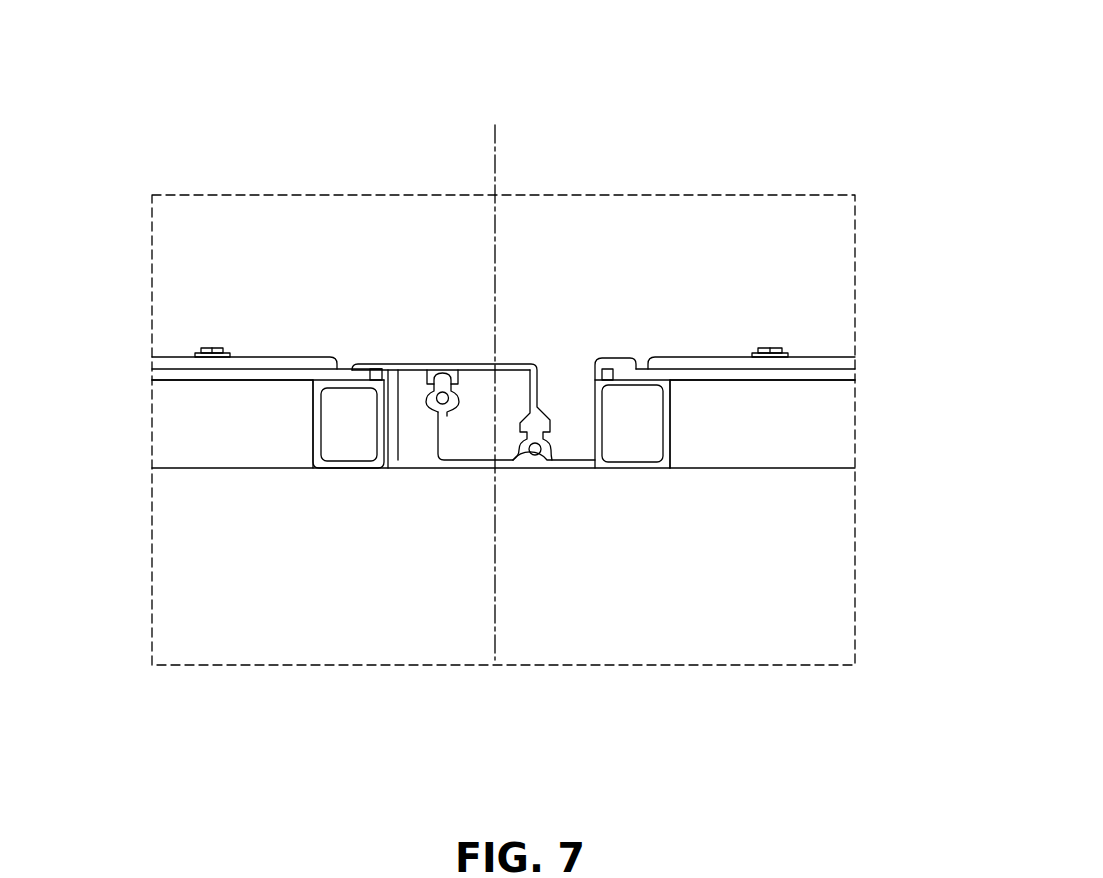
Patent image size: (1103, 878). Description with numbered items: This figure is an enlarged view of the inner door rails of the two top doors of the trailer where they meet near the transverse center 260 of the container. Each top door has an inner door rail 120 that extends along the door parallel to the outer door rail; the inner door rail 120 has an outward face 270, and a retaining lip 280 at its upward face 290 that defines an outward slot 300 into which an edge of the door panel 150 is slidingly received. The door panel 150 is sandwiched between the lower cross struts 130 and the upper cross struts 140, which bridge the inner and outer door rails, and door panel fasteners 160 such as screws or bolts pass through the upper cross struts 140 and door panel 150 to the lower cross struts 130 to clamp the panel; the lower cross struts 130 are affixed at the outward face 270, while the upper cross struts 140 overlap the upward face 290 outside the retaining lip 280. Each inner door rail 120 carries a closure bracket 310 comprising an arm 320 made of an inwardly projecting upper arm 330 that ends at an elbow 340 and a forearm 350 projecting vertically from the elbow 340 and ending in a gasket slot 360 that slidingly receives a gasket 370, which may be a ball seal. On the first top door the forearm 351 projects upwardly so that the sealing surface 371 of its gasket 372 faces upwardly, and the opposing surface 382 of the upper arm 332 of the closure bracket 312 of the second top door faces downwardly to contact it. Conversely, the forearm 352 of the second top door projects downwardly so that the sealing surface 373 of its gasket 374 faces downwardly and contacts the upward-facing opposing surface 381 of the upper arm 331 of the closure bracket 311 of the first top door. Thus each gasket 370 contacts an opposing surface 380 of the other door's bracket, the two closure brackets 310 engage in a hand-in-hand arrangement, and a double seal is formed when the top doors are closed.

The inner door rail 120 is at (322, 468).
The lower cross struts 130 is at (192, 437).
The upper cross struts 140 is at (183, 368).
The door panel 150 is at (202, 373).
The door panel fasteners 160 is at (212, 348).
The transverse center 260 is at (497, 150).
The outward face 270 is at (312, 428).
The retaining lip 280 is at (372, 363).
The upward face 290 is at (352, 385).
The outward slot 300 is at (344, 366).
The closure bracket 310 is at (553, 448).
The closure bracket of the first top door 311 is at (580, 470).
The closure bracket of the second top door 312 is at (410, 363).
The arm 320 is at (762, 14).
The upper arm 330 is at (531, 414).
The upper arm of the first top door 331 is at (478, 470).
The upper arm of the second top door 332 is at (517, 365).
The elbow 340 is at (527, 365).
The forearm 350 is at (531, 412).
The forearm of the first top door 351 is at (440, 420).
The forearm of the second top door 352 is at (540, 372).
The gasket slot 360 is at (450, 393).
The gasket 370 is at (533, 412).
The sealing surface 371 is at (440, 412).
The gasket of the first top door 372 is at (432, 372).
The sealing surface 373 is at (552, 440).
The gasket of the second top door 374 is at (541, 462).
The opposing surface 380 is at (499, 415).
The opposing surface of the first top door 381 is at (573, 453).
The opposing surface of the second top door 382 is at (412, 382).